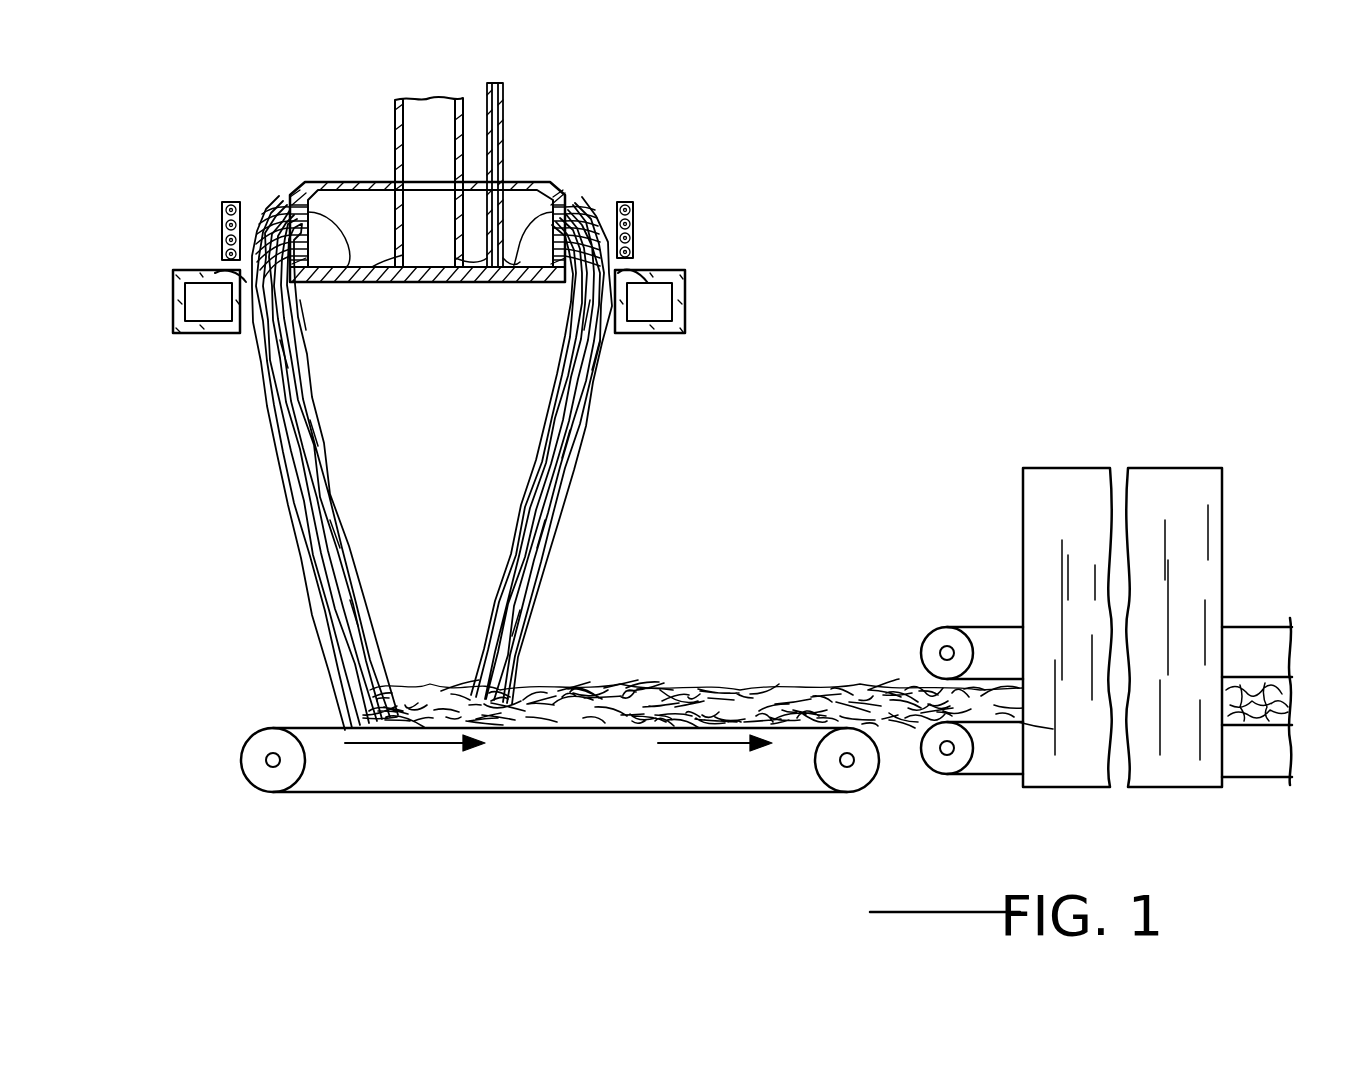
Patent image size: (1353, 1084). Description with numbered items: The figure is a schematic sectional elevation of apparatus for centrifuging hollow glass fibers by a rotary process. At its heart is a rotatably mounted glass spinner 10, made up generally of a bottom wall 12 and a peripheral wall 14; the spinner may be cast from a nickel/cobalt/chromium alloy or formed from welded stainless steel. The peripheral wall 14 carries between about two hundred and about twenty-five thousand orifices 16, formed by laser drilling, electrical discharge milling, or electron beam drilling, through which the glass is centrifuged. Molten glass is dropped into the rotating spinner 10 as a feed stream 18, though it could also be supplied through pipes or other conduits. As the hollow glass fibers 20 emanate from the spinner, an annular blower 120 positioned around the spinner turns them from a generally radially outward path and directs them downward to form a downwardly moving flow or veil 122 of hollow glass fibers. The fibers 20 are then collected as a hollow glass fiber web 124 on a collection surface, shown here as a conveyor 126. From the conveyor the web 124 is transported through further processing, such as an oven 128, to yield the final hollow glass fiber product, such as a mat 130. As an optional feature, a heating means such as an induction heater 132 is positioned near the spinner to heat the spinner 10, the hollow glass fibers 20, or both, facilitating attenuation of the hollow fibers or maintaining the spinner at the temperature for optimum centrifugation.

The glass spinner 10 is at (314, 138).
The bottom wall 12 is at (375, 283).
The peripheral wall 14 is at (553, 212).
The orifices 16 is at (290, 243).
The feed stream 18 is at (505, 118).
The hollow glass fibers 20 is at (592, 210).
The annular blower 120 is at (685, 292).
The veil 122 is at (535, 483).
The hollow glass fiber web 124 is at (688, 690).
The conveyor 126 is at (312, 722).
The oven 128 is at (1185, 415).
The mat 130 is at (1247, 690).
The induction heater 132 is at (222, 215).